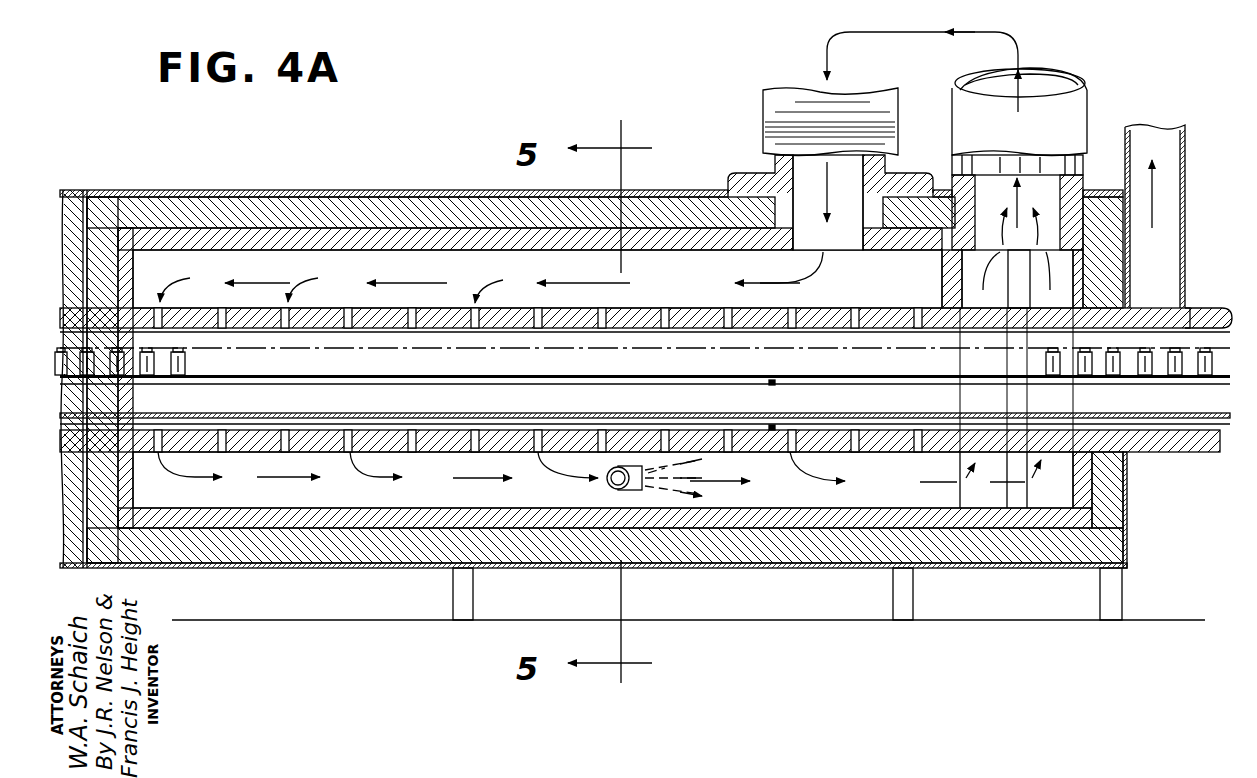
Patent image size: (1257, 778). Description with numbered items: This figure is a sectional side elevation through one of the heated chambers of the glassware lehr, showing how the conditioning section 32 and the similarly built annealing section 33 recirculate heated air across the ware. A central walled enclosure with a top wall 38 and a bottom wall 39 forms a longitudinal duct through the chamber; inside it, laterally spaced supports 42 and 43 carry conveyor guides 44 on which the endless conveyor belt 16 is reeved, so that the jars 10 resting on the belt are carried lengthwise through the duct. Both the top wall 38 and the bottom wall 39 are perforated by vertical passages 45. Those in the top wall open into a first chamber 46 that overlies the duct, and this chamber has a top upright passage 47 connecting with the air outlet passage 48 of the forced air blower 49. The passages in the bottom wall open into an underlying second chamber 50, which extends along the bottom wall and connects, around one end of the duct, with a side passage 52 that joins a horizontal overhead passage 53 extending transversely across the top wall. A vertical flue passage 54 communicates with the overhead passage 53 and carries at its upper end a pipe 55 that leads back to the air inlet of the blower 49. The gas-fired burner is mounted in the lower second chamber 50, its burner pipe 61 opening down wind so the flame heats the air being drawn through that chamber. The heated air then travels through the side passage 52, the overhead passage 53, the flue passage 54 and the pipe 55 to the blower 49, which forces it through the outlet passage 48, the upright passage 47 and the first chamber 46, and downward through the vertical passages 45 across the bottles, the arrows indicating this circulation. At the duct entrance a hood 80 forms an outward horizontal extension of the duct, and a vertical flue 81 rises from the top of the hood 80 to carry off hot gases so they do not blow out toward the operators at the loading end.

The jars 10 is at (188, 360).
The conveyor belt 16 is at (510, 372).
The conditioning section 32 is at (694, 172).
The annealing section 33 is at (70, 184).
The top wall 38 is at (480, 262).
The bottom wall 39 is at (450, 437).
The support 42 is at (430, 385).
The support 43 is at (783, 427).
The conveyor guides 44 is at (743, 410).
The vertical passages 45 is at (730, 307).
The first chamber 46 is at (362, 281).
The top upright passage 47 is at (852, 243).
The air outlet passage 48 is at (813, 157).
The forced air blower 49 is at (787, 100).
The second chamber 50 is at (795, 503).
The side passage 52 is at (1065, 503).
The horizontal overhead passage 53 is at (1000, 302).
The vertical flue passage 54 is at (1056, 203).
The pipe 55 is at (1068, 113).
The burner pipe 61 is at (606, 485).
The hood 80 is at (1212, 318).
The vertical flue 81 is at (1186, 145).